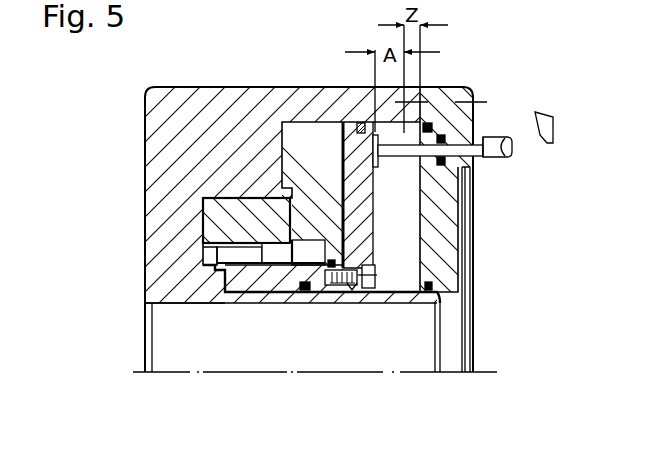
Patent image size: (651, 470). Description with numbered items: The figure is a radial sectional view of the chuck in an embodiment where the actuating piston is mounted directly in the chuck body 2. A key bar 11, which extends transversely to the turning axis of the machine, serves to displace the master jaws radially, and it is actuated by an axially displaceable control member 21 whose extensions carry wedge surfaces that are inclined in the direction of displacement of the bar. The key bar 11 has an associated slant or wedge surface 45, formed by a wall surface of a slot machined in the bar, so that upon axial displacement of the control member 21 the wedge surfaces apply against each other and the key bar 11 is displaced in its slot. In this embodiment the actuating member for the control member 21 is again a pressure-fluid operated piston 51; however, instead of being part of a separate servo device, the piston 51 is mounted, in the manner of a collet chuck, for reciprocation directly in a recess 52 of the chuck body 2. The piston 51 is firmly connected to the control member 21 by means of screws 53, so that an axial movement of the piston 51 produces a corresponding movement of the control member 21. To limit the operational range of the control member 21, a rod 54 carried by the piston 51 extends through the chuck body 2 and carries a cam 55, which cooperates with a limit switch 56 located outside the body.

The chuck body 2 is at (305, 88).
The key bar 11 is at (203, 210).
The control member 21 is at (237, 293).
The slant or wedge surface 45 is at (203, 249).
The piston 51 is at (358, 216).
The recess 52 is at (410, 266).
The screw 53 is at (358, 290).
The rod 54 is at (462, 152).
The cam 55 is at (506, 158).
The limit switch 56 is at (543, 120).